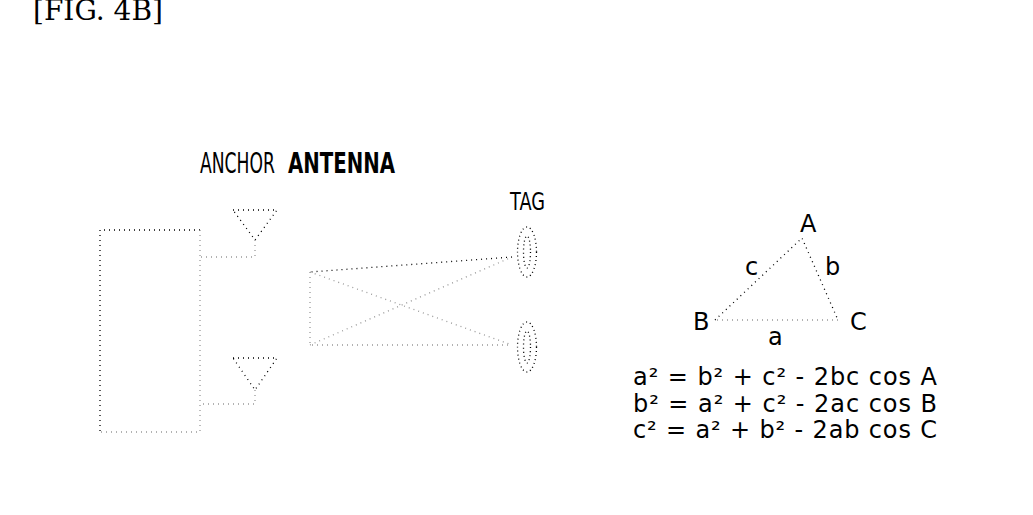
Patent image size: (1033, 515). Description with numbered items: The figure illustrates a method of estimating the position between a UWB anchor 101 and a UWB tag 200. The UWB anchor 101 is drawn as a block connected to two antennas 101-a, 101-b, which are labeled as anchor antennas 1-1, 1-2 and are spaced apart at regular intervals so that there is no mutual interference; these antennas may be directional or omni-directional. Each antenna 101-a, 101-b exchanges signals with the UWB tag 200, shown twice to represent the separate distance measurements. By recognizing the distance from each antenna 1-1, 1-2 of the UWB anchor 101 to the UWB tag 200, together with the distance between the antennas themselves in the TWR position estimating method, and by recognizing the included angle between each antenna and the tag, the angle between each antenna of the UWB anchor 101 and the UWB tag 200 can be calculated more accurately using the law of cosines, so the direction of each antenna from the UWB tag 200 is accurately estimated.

The UWB anchor 101 is at (141, 230).
The first anchor antenna 1-1 is at (271, 219).
The second anchor antenna 1-2 is at (272, 367).
The antenna 101-a is at (271, 233).
The antenna 101-b is at (272, 381).
The UWB tag 200 is at (556, 299).